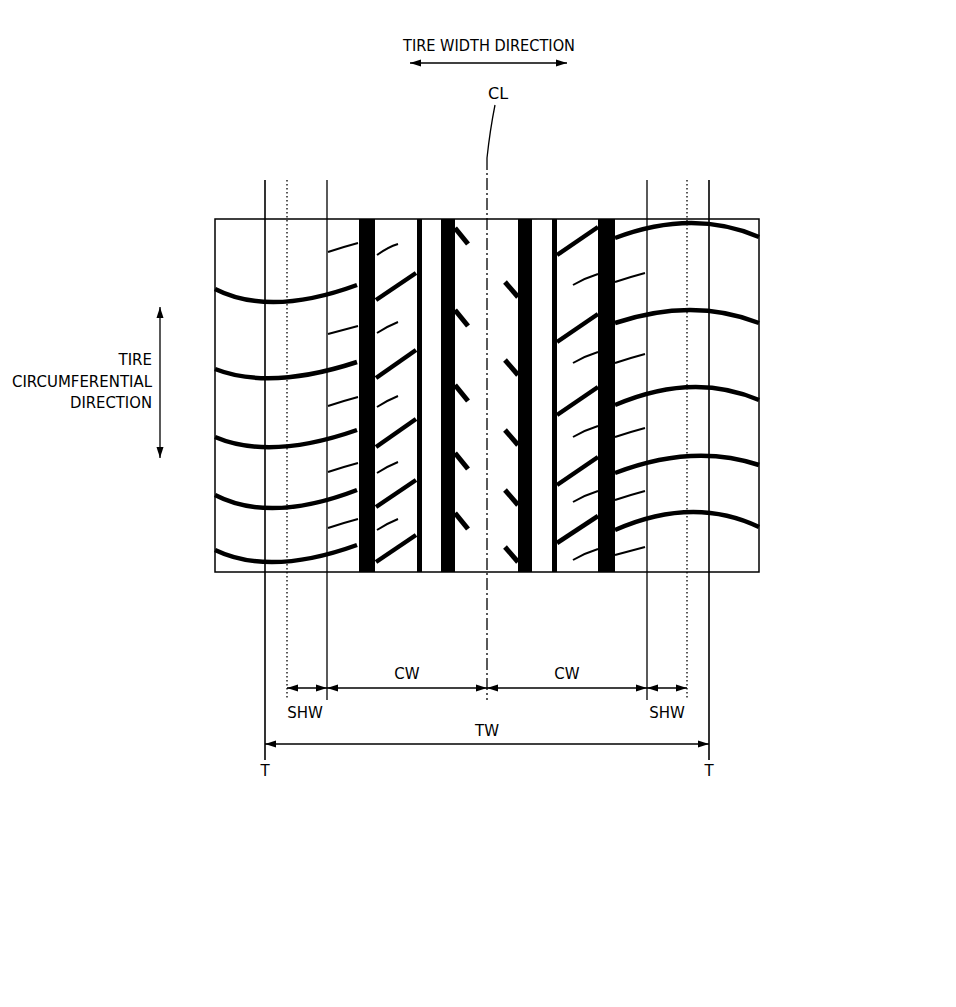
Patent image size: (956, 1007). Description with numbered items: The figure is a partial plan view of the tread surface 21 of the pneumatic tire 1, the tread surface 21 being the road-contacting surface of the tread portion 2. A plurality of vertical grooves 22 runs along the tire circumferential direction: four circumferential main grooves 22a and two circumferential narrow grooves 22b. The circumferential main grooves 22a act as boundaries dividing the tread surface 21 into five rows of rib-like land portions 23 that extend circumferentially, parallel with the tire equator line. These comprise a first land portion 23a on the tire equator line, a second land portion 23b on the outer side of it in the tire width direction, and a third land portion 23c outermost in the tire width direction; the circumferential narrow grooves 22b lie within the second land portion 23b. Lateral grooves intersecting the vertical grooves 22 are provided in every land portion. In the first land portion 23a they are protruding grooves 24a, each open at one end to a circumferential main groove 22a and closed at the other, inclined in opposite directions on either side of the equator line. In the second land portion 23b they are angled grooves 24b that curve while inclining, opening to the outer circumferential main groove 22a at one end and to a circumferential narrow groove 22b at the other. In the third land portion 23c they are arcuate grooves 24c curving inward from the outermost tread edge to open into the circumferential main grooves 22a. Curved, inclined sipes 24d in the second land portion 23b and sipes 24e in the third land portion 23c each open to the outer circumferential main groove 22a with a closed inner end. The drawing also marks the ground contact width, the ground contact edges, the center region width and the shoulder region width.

The pneumatic tire 1 is at (712, 96).
The tread portion 2 is at (730, 222).
The tread surface 21 is at (643, 232).
The vertical grooves 22 is at (490, 338).
The circumferential main grooves 22a is at (610, 193).
The circumferential narrow grooves 22b is at (554, 222).
The land portions 23 is at (485, 372).
The first land portion 23a is at (469, 560).
The second land portion 23b is at (428, 560).
The third land portion 23c is at (226, 560).
The protruding grooves 24a is at (505, 562).
The angled grooves 24b is at (398, 550).
The arcuate grooves 24c is at (222, 502).
The sipes 24d is at (643, 144).
The sipes 24e is at (678, 166).